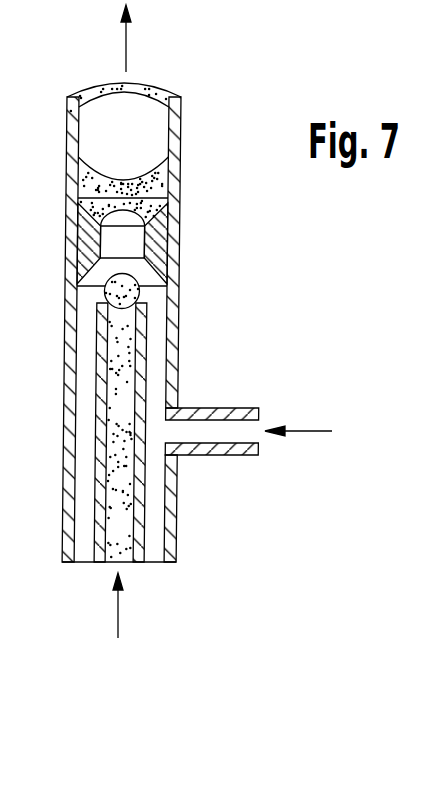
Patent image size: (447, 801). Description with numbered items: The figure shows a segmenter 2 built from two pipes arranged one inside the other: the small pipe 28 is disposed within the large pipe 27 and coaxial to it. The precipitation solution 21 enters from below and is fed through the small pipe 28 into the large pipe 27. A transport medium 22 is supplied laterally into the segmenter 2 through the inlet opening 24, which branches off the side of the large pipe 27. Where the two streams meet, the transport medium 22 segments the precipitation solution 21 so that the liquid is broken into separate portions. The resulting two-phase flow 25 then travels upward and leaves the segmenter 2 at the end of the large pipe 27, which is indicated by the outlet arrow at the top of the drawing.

The segmenter 2 is at (199, 122).
The precipitation solution 21 is at (131, 605).
The transport medium 22 is at (298, 421).
The inlet opening 24 is at (228, 432).
The two-phase flow 25 is at (140, 38).
The large pipe 27 is at (178, 230).
The small pipe 28 is at (150, 313).